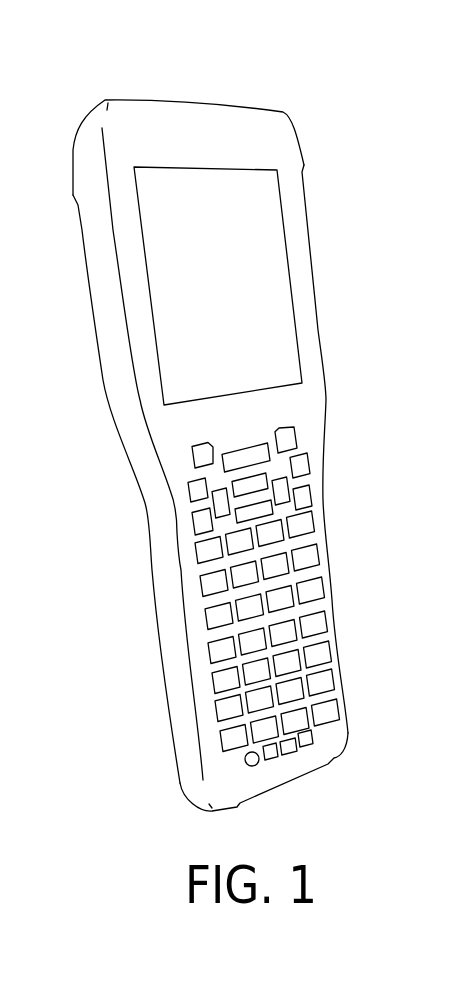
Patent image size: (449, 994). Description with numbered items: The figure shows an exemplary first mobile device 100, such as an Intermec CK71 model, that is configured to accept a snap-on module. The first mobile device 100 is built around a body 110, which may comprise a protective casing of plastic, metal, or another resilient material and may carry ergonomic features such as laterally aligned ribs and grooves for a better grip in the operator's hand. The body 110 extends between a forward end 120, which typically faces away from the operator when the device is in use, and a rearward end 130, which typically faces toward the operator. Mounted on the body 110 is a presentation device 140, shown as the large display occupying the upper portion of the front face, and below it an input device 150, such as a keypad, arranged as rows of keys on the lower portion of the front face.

The first mobile device 100 is at (355, 435).
The body 110 is at (102, 330).
The forward end 120 is at (212, 100).
The rearward end 130 is at (293, 785).
The presentation device 140 is at (255, 287).
The input device 150 is at (330, 585).